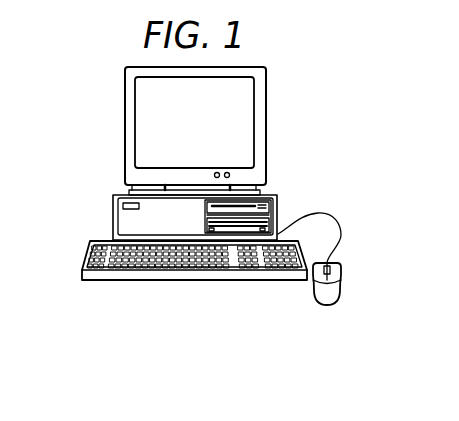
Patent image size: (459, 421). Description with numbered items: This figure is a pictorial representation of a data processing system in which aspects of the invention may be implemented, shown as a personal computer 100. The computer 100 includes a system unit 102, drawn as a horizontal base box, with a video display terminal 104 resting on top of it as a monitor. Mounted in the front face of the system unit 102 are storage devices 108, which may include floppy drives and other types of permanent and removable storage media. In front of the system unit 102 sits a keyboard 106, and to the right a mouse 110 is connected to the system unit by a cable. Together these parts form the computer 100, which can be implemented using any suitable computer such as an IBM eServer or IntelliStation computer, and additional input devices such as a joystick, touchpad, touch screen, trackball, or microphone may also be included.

The computer 100 is at (67, 118).
The system unit 102 is at (113, 214).
The video display terminal 104 is at (266, 126).
The keyboard 106 is at (108, 281).
The storage devices 108 is at (277, 208).
The mouse 110 is at (328, 305).